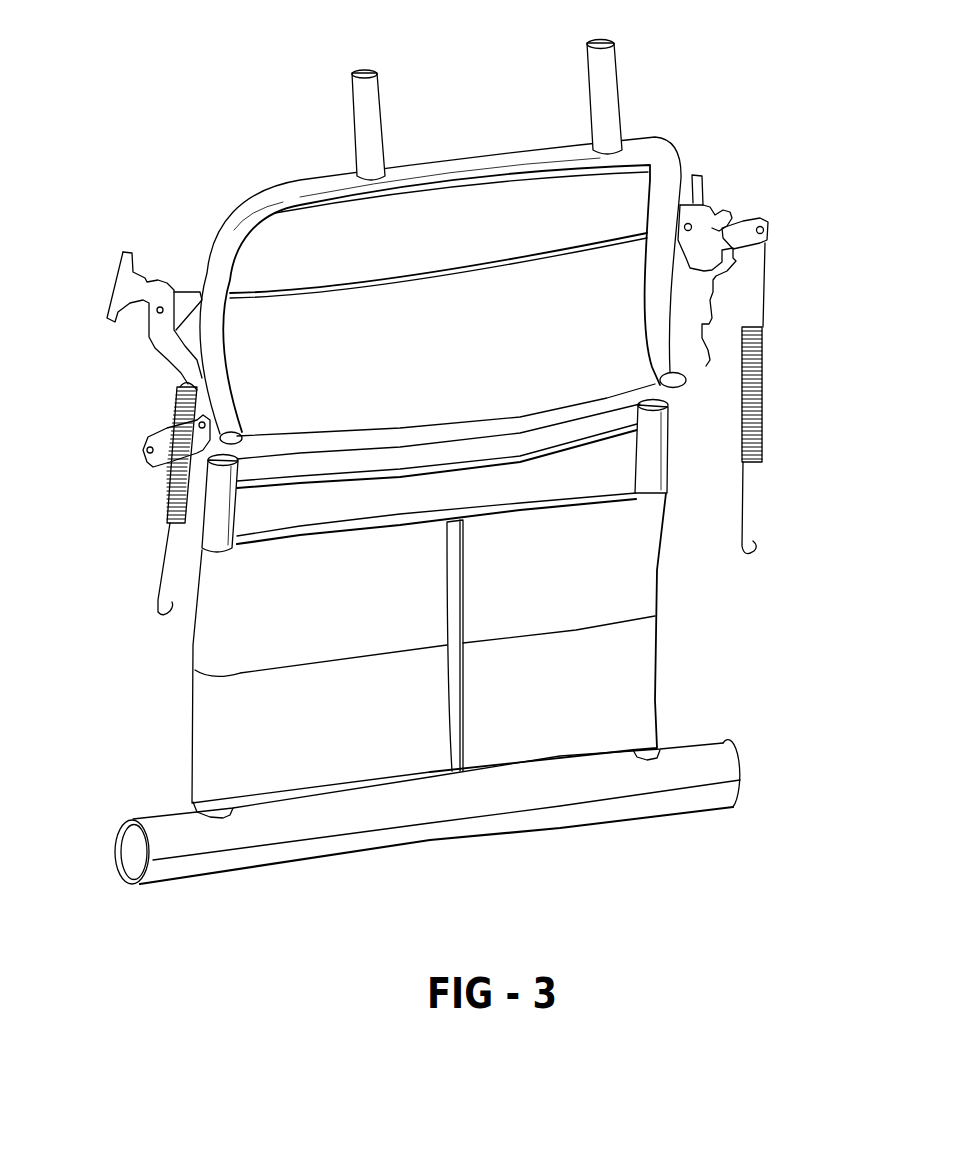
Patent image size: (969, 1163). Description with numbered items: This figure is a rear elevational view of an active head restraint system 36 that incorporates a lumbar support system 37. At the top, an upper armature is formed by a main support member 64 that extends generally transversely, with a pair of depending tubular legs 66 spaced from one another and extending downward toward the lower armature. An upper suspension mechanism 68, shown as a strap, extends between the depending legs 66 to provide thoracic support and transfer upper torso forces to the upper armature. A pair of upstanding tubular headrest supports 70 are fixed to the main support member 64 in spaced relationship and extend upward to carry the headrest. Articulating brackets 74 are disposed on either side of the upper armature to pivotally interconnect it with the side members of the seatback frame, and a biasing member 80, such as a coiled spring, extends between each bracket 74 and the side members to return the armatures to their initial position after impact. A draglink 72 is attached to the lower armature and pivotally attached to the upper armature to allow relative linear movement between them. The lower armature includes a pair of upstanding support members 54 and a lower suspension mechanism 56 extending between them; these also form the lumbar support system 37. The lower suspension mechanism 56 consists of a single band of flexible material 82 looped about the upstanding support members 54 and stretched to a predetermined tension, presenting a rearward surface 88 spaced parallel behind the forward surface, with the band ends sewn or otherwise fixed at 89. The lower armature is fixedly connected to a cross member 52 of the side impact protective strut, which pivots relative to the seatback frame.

The active head restraint system 36 is at (452, 457).
The lumbar support system 37 is at (439, 655).
The cross member 52 is at (607, 806).
The upstanding support members 54 is at (223, 508).
The lower suspension mechanism 56 is at (423, 646).
The main support member 64 is at (512, 158).
The depending tubular legs 66 is at (653, 183).
The upper suspension mechanism 68 is at (353, 307).
The upstanding tubular headrest supports 70 is at (617, 92).
The draglink 72 is at (153, 457).
The articulating brackets 74 is at (740, 225).
The biasing member 80 is at (763, 373).
The band of flexible material 82 is at (222, 723).
The rearward surface 88 is at (644, 682).
The sewn ends 89 is at (462, 745).